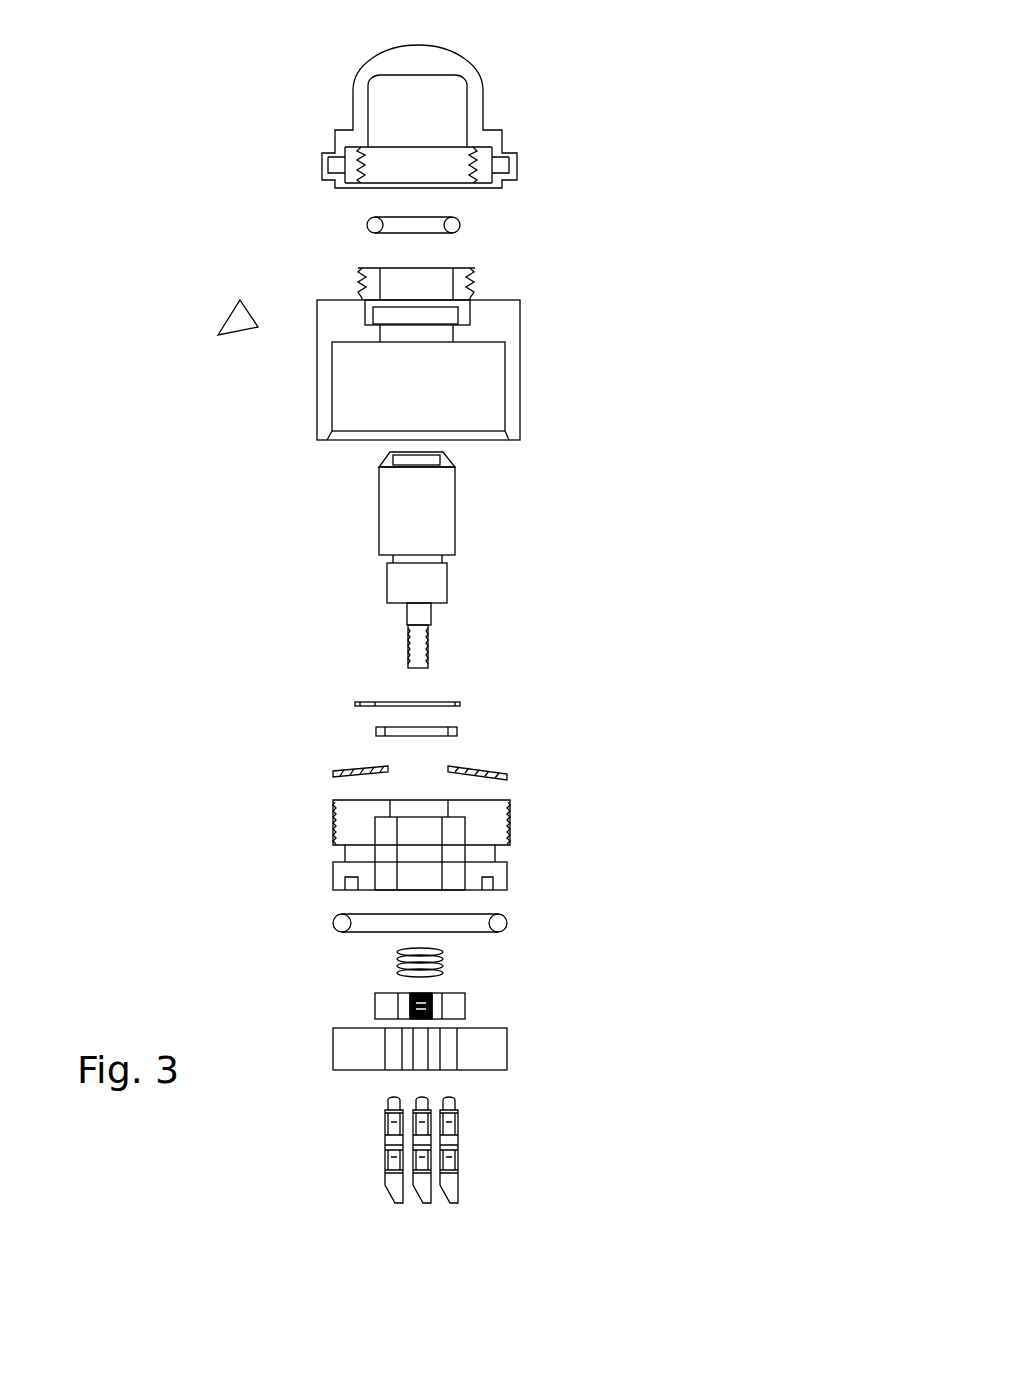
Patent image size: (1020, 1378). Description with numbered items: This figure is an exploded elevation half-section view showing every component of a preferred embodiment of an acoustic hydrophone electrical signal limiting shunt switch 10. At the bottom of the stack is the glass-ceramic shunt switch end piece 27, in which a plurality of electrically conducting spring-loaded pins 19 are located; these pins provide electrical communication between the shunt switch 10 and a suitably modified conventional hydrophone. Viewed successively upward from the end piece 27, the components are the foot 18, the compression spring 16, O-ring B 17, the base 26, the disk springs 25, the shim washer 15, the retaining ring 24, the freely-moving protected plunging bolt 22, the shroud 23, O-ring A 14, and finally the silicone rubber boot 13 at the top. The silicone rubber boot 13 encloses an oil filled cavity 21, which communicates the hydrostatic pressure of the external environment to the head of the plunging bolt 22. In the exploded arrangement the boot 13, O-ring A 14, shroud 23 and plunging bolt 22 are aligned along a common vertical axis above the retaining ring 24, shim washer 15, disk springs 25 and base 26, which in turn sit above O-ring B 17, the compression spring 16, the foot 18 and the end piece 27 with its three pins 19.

The shunt switch 10 is at (223, 317).
The silicone rubber boot 13 is at (473, 70).
The O-ring A 14 is at (460, 222).
The shim washer 15 is at (458, 730).
The compression spring 16 is at (445, 962).
The O-ring B 17 is at (505, 912).
The foot 18 is at (467, 1010).
The electrically conducting spring-loaded pins 19 is at (460, 1193).
The oil filled cavity 21 is at (400, 115).
The plunging bolt 22 is at (457, 508).
The shroud 23 is at (520, 378).
The retaining ring 24 is at (462, 703).
The disk springs 25 is at (488, 768).
The base 26 is at (510, 832).
The glass-ceramic shunt switch end piece 27 is at (507, 1050).